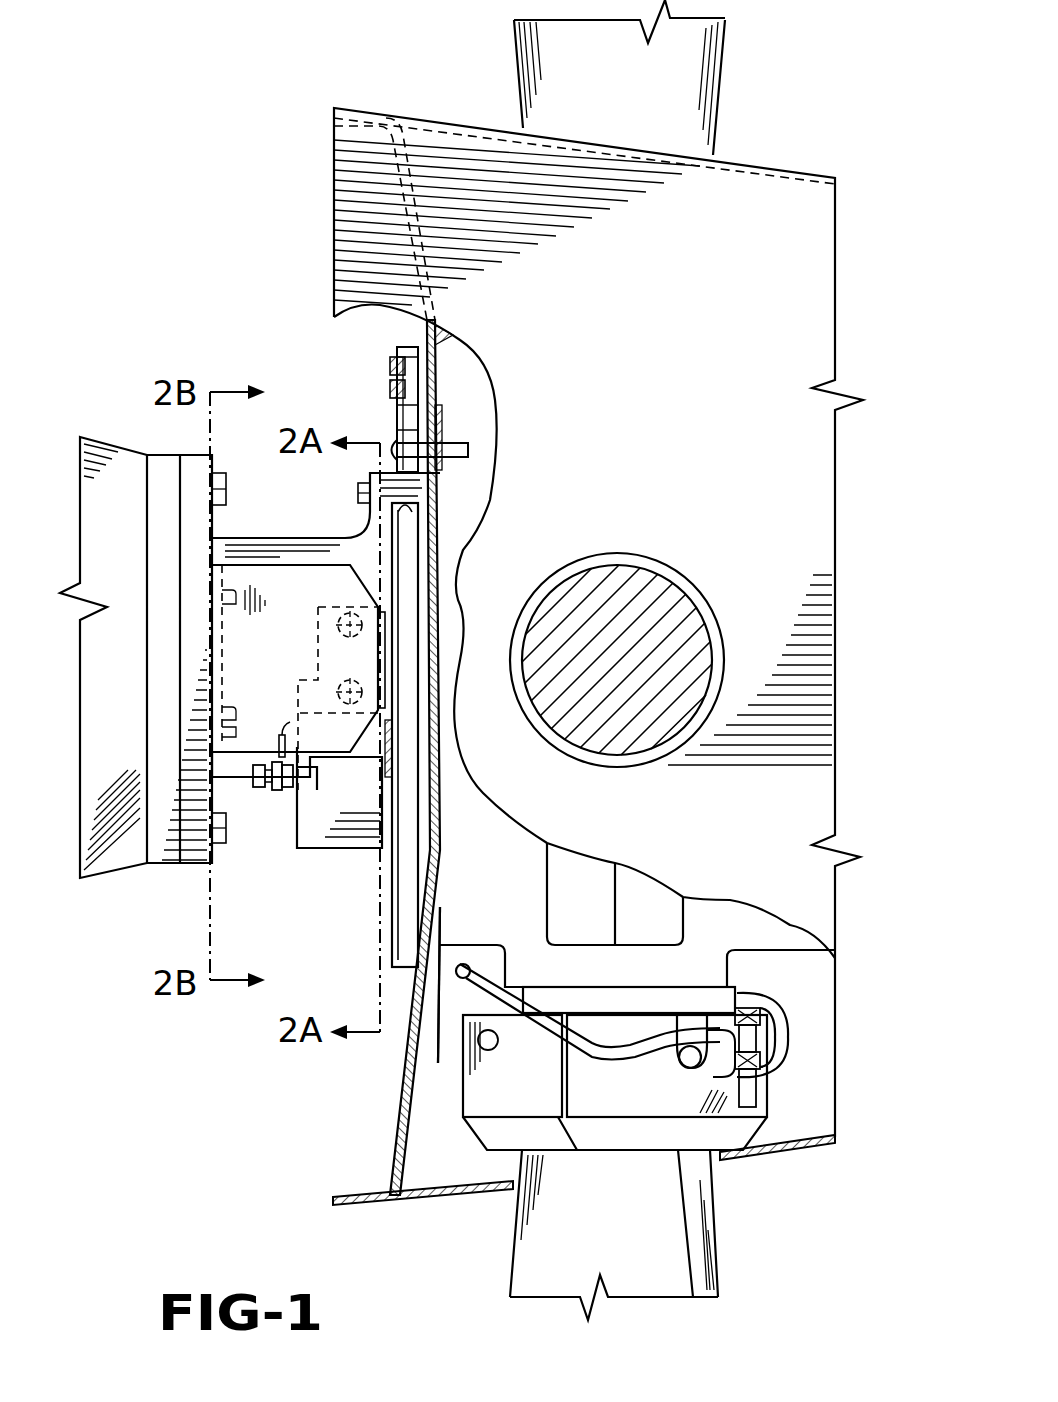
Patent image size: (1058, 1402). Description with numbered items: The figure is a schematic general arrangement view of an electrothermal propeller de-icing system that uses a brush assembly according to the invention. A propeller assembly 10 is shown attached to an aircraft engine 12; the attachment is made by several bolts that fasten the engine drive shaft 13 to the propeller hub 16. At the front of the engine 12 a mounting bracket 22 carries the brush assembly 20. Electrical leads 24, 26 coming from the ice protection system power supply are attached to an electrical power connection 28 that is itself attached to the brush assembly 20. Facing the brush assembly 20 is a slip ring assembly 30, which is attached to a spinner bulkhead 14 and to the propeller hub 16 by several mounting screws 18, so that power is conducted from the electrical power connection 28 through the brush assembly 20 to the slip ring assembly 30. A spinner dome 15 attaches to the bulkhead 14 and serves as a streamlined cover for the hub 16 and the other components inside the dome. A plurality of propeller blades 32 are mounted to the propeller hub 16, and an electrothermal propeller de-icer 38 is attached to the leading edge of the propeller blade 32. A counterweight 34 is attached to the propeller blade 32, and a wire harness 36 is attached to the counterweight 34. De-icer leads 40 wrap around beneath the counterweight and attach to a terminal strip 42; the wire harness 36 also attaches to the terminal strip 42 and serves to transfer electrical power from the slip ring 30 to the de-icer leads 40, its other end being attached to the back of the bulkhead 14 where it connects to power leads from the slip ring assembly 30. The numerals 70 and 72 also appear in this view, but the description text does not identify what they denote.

The propeller assembly 10 is at (776, 150).
The aircraft engine 12 is at (97, 425).
The engine drive shaft 13 is at (297, 538).
The spinner bulkhead 14 is at (397, 1143).
The spinner dome 15 is at (467, 1190).
The propeller hub 16 is at (440, 1001).
The mounting screws 18 is at (458, 440).
The brush assembly 20 is at (365, 880).
The mounting bracket 22 is at (240, 557).
The electrical lead 24 is at (242, 818).
The electrical lead 26 is at (260, 815).
The electrical power connection 28 is at (282, 825).
The slip ring assembly 30 is at (392, 335).
The propeller blade 32 is at (670, 568).
The counterweight 34 is at (810, 1105).
The wire harness 36 is at (528, 1022).
The electrothermal propeller de-icer 38 is at (710, 1260).
The de-icer leads 40 is at (758, 995).
The terminal strip 42 is at (733, 1107).
The washer 70 is at (400, 386).
The nut 72 is at (400, 358).